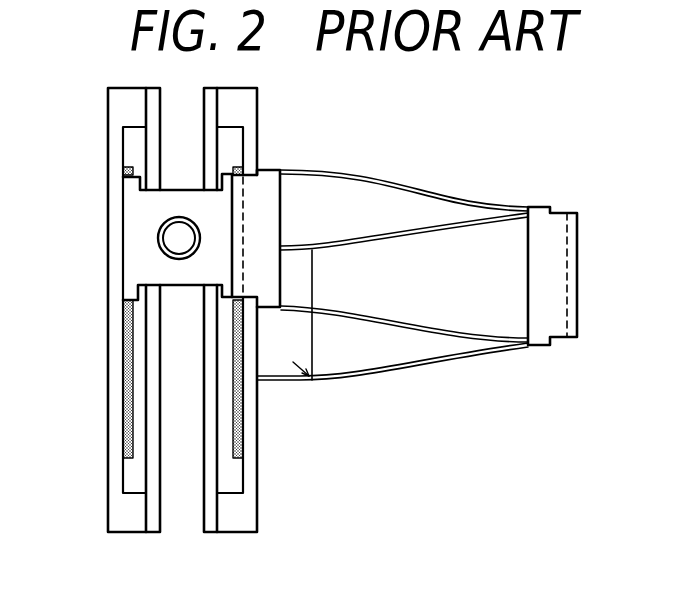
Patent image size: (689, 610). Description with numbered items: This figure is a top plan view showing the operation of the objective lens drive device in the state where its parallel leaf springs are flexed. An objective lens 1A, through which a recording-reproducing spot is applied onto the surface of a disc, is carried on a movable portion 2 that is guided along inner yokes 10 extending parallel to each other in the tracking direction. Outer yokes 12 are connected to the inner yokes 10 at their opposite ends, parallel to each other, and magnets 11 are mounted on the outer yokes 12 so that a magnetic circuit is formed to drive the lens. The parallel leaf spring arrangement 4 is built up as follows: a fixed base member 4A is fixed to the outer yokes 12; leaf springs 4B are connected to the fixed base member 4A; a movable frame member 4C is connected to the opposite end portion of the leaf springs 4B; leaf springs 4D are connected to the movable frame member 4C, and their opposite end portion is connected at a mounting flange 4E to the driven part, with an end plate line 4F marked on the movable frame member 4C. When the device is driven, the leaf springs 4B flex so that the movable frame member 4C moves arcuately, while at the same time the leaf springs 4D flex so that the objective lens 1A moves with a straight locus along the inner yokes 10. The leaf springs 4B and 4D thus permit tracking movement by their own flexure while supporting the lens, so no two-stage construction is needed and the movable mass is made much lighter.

The objective lens 1A is at (160, 232).
The slider body 2 is at (142, 237).
The flexure arm assembly 4 is at (443, 267).
The fixed base member 4A is at (316, 383).
The leaf springs 4B is at (340, 244).
The movable frame member 4C is at (567, 335).
The leaf springs 4D is at (382, 180).
The mounting flange 4E is at (272, 176).
The end plate line 4F is at (553, 233).
The inner yokes 10 is at (177, 330).
The magnets 11 is at (127, 333).
The outer yokes 12 is at (108, 483).